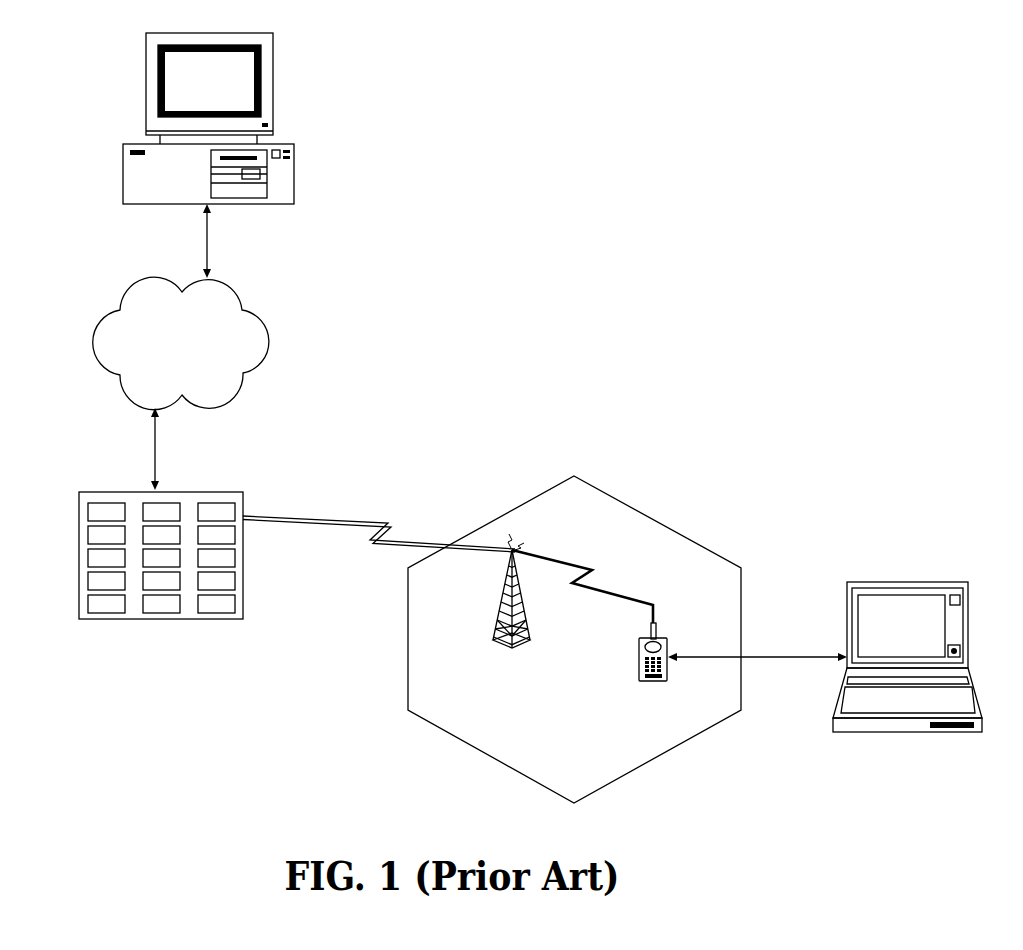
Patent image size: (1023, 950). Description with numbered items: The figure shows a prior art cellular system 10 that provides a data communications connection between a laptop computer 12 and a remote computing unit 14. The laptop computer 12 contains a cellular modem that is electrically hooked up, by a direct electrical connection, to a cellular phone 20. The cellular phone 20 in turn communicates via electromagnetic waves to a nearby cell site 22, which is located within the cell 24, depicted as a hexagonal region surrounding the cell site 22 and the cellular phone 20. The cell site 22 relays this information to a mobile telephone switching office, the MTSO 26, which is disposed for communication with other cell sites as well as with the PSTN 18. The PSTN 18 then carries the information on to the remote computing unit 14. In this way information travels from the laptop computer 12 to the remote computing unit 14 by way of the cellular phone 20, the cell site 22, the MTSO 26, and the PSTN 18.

The system 10 is at (708, 252).
The laptop computer 12 is at (908, 582).
The remote computing unit 14 is at (296, 161).
The PSTN 18 is at (270, 343).
The cellular phone 20 is at (667, 668).
The cell site 22 is at (525, 608).
The cell 24 is at (645, 765).
The mobile telephone switching office (MTSO) 26 is at (220, 494).